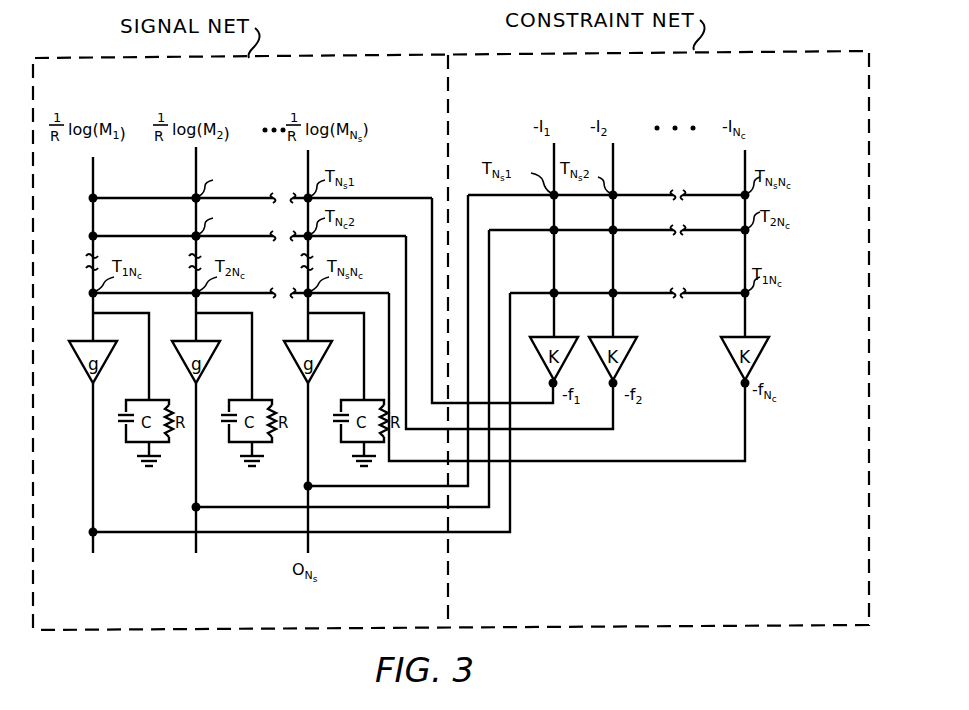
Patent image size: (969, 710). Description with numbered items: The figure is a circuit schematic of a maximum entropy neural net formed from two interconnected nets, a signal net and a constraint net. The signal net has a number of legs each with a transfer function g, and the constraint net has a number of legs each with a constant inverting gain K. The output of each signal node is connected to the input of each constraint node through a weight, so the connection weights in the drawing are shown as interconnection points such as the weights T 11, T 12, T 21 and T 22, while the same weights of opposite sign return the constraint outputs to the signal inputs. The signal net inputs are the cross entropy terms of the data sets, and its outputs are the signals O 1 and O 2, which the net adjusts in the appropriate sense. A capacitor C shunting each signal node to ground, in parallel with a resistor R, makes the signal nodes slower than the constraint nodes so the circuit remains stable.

The synapse T11 11 is at (96, 196).
The synapse T12 12 is at (96, 234).
The synapse T21 21 is at (199, 196).
The synapse T22 22 is at (199, 234).
The output O1 1 is at (94, 555).
The output O2 2 is at (196, 543).